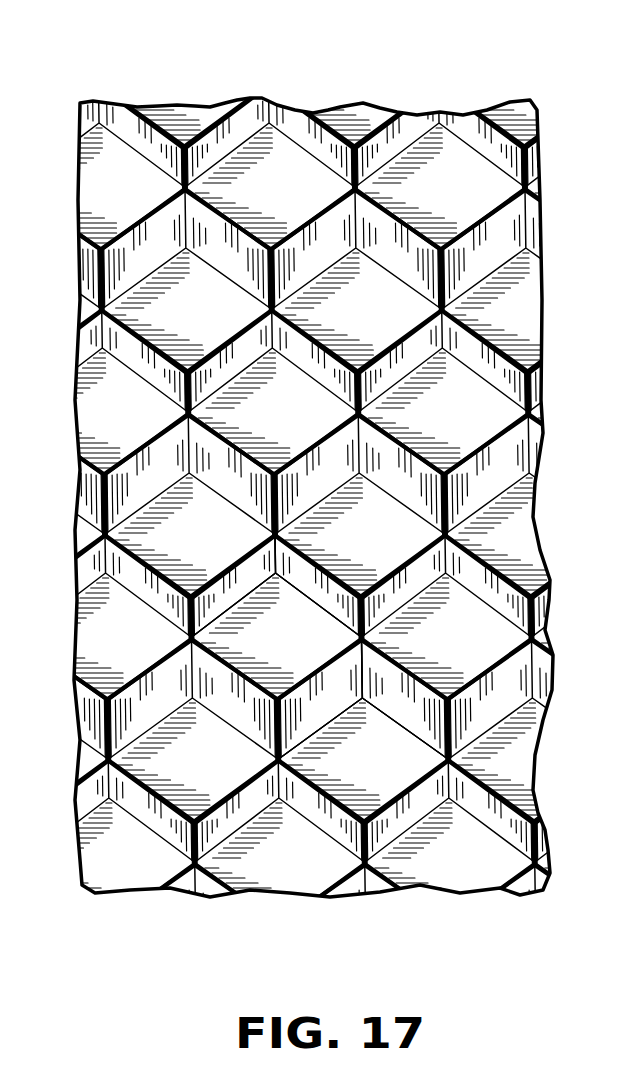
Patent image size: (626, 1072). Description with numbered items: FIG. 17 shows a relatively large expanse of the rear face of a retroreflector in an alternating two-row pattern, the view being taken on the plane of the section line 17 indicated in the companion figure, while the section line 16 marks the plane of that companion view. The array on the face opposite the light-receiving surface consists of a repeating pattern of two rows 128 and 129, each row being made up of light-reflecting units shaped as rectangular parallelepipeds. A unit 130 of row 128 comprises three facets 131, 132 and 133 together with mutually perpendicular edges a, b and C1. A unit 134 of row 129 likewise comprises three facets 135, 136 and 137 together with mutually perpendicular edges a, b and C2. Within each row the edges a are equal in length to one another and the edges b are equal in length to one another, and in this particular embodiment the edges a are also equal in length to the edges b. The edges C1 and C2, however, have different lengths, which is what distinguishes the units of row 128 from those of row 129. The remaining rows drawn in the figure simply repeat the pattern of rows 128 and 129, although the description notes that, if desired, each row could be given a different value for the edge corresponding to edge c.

The row 128 is at (550, 413).
The row 129 is at (63, 312).
The unit 130 is at (392, 808).
The facet 131 is at (380, 790).
The facet 132 is at (333, 716).
The facet 133 is at (423, 715).
The unit 134 is at (248, 692).
The facet 135 is at (295, 663).
The facet 136 is at (243, 603).
The facet 137 is at (333, 601).
The edge a is at (218, 617).
The edge b is at (333, 622).
The edge C1 is at (367, 673).
The edge C2 is at (280, 558).
The section line 16— 16 is at (205, 55).
The section line 17— 17 is at (1, 915).